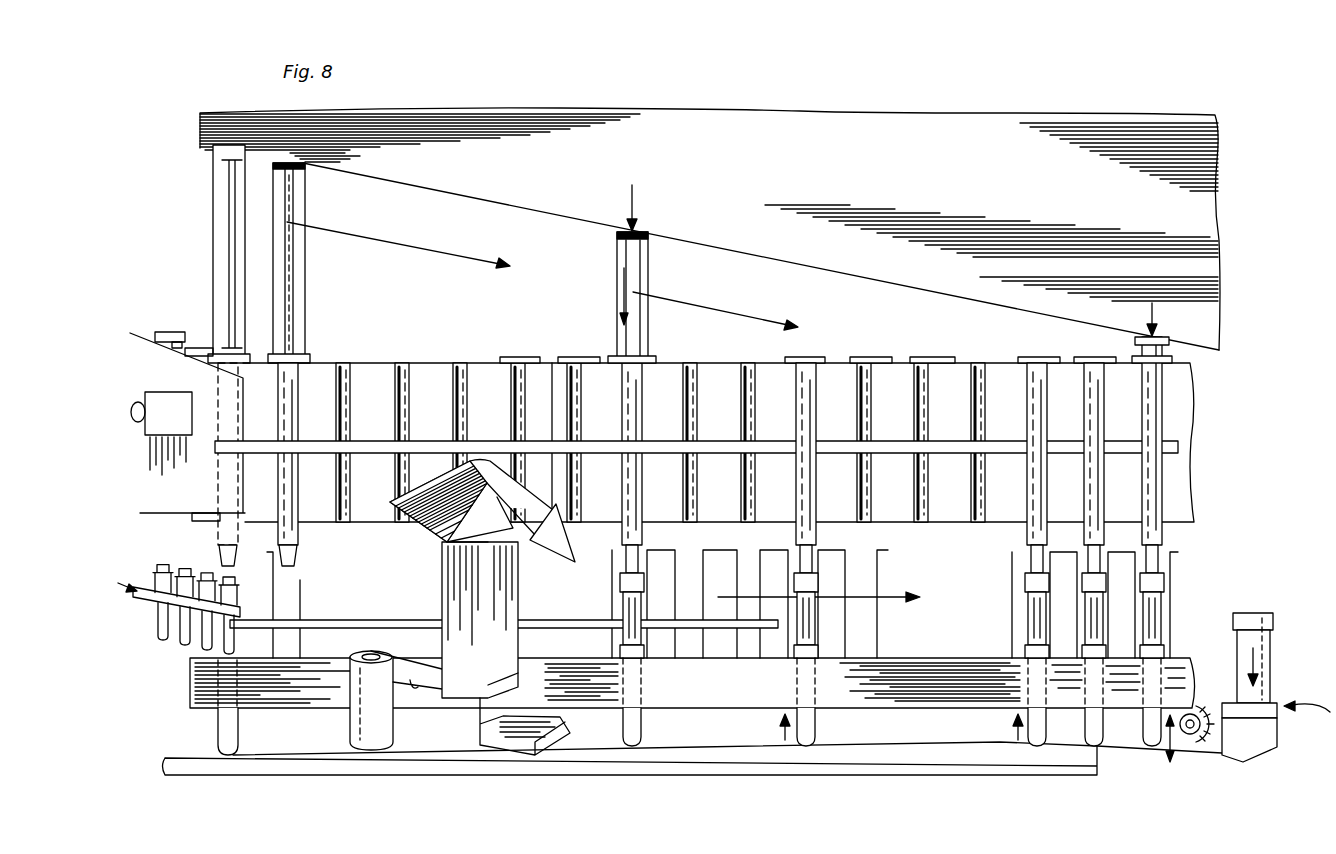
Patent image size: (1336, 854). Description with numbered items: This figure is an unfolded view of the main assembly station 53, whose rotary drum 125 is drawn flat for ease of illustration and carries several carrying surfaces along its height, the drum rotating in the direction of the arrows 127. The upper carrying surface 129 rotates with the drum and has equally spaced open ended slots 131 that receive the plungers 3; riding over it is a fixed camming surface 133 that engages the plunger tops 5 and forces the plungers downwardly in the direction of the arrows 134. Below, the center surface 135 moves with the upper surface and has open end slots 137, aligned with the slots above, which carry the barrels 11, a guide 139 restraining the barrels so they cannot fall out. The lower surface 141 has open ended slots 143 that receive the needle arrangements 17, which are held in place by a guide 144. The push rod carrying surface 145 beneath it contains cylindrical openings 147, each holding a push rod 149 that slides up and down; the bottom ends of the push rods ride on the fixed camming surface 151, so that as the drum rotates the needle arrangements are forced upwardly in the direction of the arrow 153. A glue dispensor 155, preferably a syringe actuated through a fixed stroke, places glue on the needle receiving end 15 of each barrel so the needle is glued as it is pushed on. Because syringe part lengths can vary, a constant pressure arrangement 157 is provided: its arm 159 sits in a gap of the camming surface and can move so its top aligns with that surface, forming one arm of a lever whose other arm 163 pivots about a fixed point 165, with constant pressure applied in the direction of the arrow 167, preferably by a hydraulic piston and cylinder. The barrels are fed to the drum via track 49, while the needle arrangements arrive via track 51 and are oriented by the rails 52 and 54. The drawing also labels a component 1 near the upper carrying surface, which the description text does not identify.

The container column 1 is at (283, 192).
The plunger 3 is at (287, 294).
The plunger top 5 is at (293, 165).
The barrel 11 is at (183, 311).
The needle receiving end 15 is at (294, 553).
The needle arrangement 17 is at (156, 648).
The track 49 is at (143, 332).
The track 51 is at (152, 612).
The rail 52 is at (133, 581).
The main assembly station 53 is at (562, 67).
The rail 54 is at (260, 605).
The rotary drum 125 is at (882, 318).
The arrows 127 is at (396, 244).
The upper carrying surface 129 is at (258, 165).
The open ended slot 131 is at (278, 238).
The camming surface 133 is at (690, 242).
The arrows 134 is at (621, 289).
The center surface 135 is at (434, 360).
The open end slot 137 is at (303, 378).
The guide 139 is at (716, 441).
The lower surface 141 is at (735, 544).
The open ended slot 143 is at (302, 583).
The guide 144 is at (583, 595).
The push rod carrying surface 145 is at (926, 657).
The cylindrical opening 147 is at (642, 675).
The push rod 149 is at (647, 733).
The camming surface 151 is at (906, 744).
The arrow 153 is at (781, 729).
The glue dispensor 155 is at (473, 518).
The constant pressure arrangement 157 is at (1307, 700).
The arm 159 is at (1146, 742).
The lever arm 163 is at (1228, 753).
The fixed point 165 is at (1188, 734).
The arrow 167 is at (1273, 659).